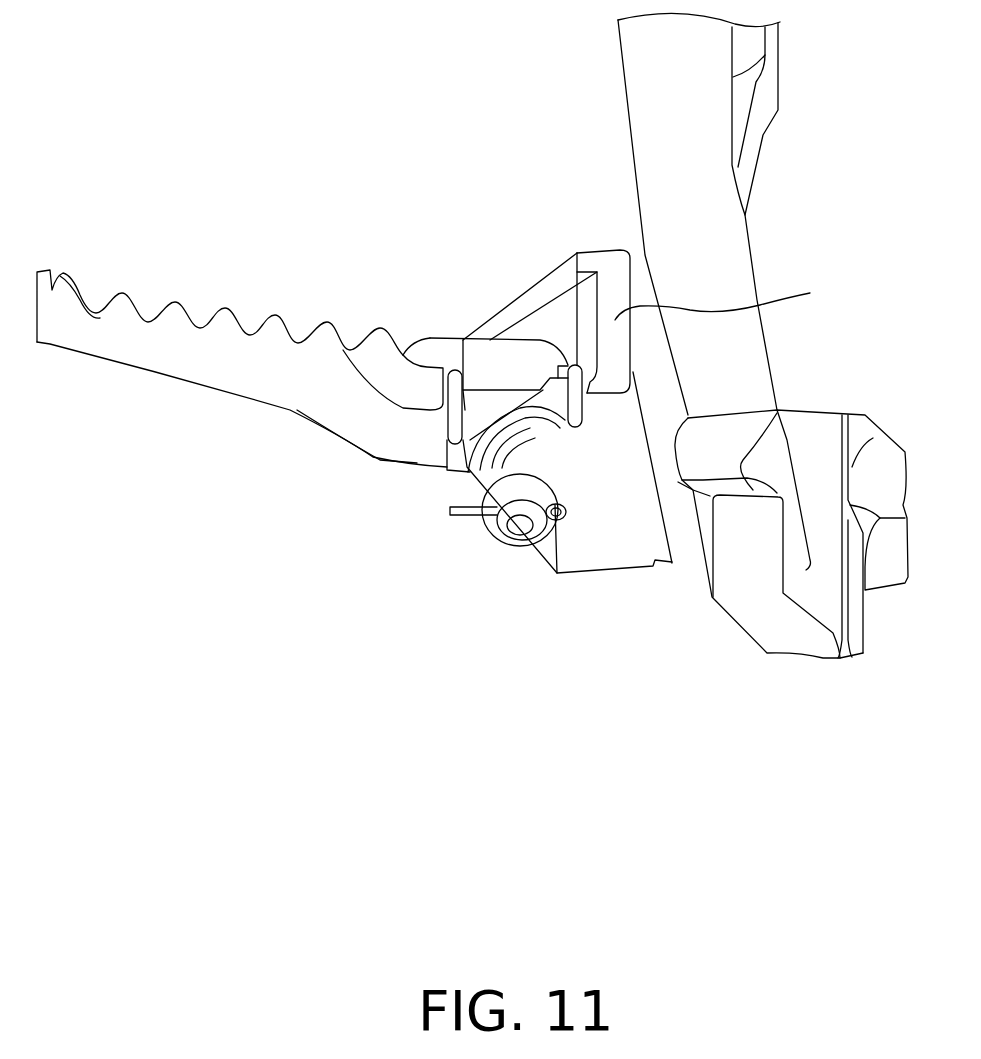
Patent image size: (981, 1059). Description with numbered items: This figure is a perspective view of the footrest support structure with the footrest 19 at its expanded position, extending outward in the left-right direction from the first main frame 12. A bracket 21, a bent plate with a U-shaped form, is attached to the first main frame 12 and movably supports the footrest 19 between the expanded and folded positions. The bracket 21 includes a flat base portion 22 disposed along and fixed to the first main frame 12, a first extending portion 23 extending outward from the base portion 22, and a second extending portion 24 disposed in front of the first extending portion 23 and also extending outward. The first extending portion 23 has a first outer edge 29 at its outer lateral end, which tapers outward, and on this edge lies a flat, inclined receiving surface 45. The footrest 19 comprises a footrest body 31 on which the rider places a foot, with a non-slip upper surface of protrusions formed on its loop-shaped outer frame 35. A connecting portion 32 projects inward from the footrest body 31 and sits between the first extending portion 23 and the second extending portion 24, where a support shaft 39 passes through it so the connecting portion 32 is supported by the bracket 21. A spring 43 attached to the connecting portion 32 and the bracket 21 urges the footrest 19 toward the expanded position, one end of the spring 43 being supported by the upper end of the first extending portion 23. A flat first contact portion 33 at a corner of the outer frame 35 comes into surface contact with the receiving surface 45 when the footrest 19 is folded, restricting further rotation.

The first main frame 12 is at (640, 85).
The footrest 19 is at (316, 208).
The bracket 21 is at (620, 583).
The base portion 22 is at (737, 294).
The first extending portion 23 is at (602, 527).
The second extending portion 24 is at (550, 317).
The first outer edge 29 is at (470, 472).
The footrest body 31 is at (185, 286).
The connecting portion 32 is at (495, 360).
The first contact portion 33 is at (463, 340).
The outer frame 35 is at (177, 355).
The support shaft 39 is at (530, 548).
The spring 43 is at (470, 430).
The receiving surface 45 is at (556, 522).